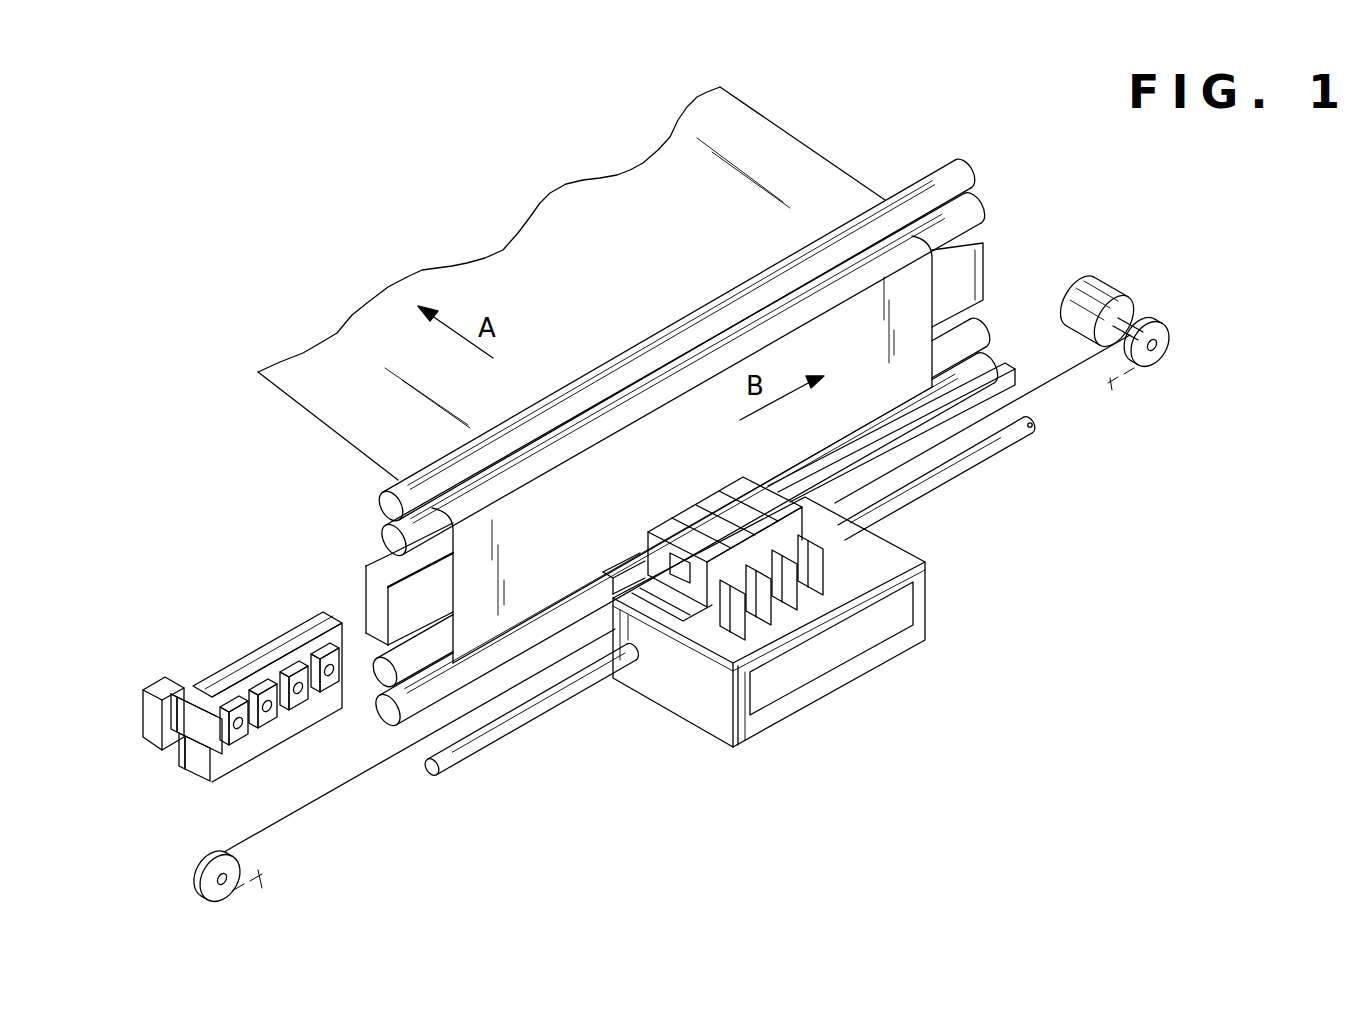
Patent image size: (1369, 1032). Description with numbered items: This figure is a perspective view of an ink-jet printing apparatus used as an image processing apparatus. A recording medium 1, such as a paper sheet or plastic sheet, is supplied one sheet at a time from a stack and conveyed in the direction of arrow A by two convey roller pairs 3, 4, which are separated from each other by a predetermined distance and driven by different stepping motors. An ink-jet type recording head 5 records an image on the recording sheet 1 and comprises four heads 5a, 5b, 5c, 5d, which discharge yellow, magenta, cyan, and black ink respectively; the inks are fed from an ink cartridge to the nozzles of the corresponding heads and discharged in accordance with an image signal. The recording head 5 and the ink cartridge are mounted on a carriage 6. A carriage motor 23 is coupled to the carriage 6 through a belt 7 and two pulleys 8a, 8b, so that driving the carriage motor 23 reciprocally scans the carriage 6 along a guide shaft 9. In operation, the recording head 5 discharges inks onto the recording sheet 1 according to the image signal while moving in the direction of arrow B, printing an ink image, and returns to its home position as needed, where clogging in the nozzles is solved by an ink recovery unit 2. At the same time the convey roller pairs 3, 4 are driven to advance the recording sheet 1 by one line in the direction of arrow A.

The recording medium 1 is at (806, 158).
The ink recovery unit 2 is at (262, 660).
The convey roller pair 3 is at (995, 363).
The convey roller pair 4 is at (975, 179).
The recording head 5 is at (723, 567).
The head 5a is at (690, 510).
The head 5b is at (690, 509).
The head 5c is at (711, 497).
The head 5d is at (733, 484).
The carriage 6 is at (895, 540).
The belt 7 is at (334, 793).
The pulley 8a is at (1151, 368).
The pulley 8b is at (220, 902).
The guide shaft 9 is at (543, 706).
The carriage motor 23 is at (1100, 290).